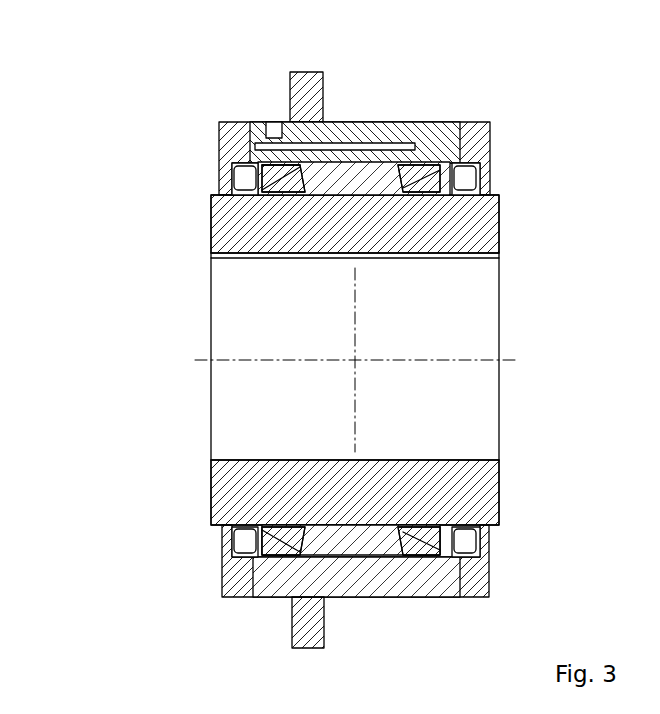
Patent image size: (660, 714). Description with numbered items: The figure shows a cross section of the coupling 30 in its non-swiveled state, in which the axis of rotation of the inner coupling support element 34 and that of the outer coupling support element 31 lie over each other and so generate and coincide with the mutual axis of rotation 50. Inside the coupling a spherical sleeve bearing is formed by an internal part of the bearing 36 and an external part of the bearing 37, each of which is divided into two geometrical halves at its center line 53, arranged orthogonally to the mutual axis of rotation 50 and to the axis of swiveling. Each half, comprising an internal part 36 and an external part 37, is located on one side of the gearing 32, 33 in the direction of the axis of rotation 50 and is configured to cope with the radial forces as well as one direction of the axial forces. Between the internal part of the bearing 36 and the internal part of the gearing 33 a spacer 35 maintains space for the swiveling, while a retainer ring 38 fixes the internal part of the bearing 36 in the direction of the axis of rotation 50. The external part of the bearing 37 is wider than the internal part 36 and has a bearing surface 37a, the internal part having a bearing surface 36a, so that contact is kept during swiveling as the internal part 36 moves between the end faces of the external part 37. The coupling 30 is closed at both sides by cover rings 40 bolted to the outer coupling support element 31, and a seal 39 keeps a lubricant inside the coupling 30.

The coupling 30 is at (140, 110).
The outer coupling support element 31 is at (423, 582).
The gearing 32 is at (393, 552).
The internal part of the gearing 33 is at (372, 185).
The inner coupling support element 34 is at (483, 222).
The spacer 35 is at (403, 188).
The internal part of the bearing 36 is at (283, 192).
The bearing surface of the internal part 36a is at (297, 172).
The external part of the bearing 37 is at (272, 168).
The bearing surface of the external part 37a is at (281, 135).
The retainer ring 38 is at (268, 530).
The seal 39 is at (232, 184).
The cover ring 40 is at (243, 572).
The mutual axis of rotation 50 is at (450, 363).
The center line 53 is at (362, 305).